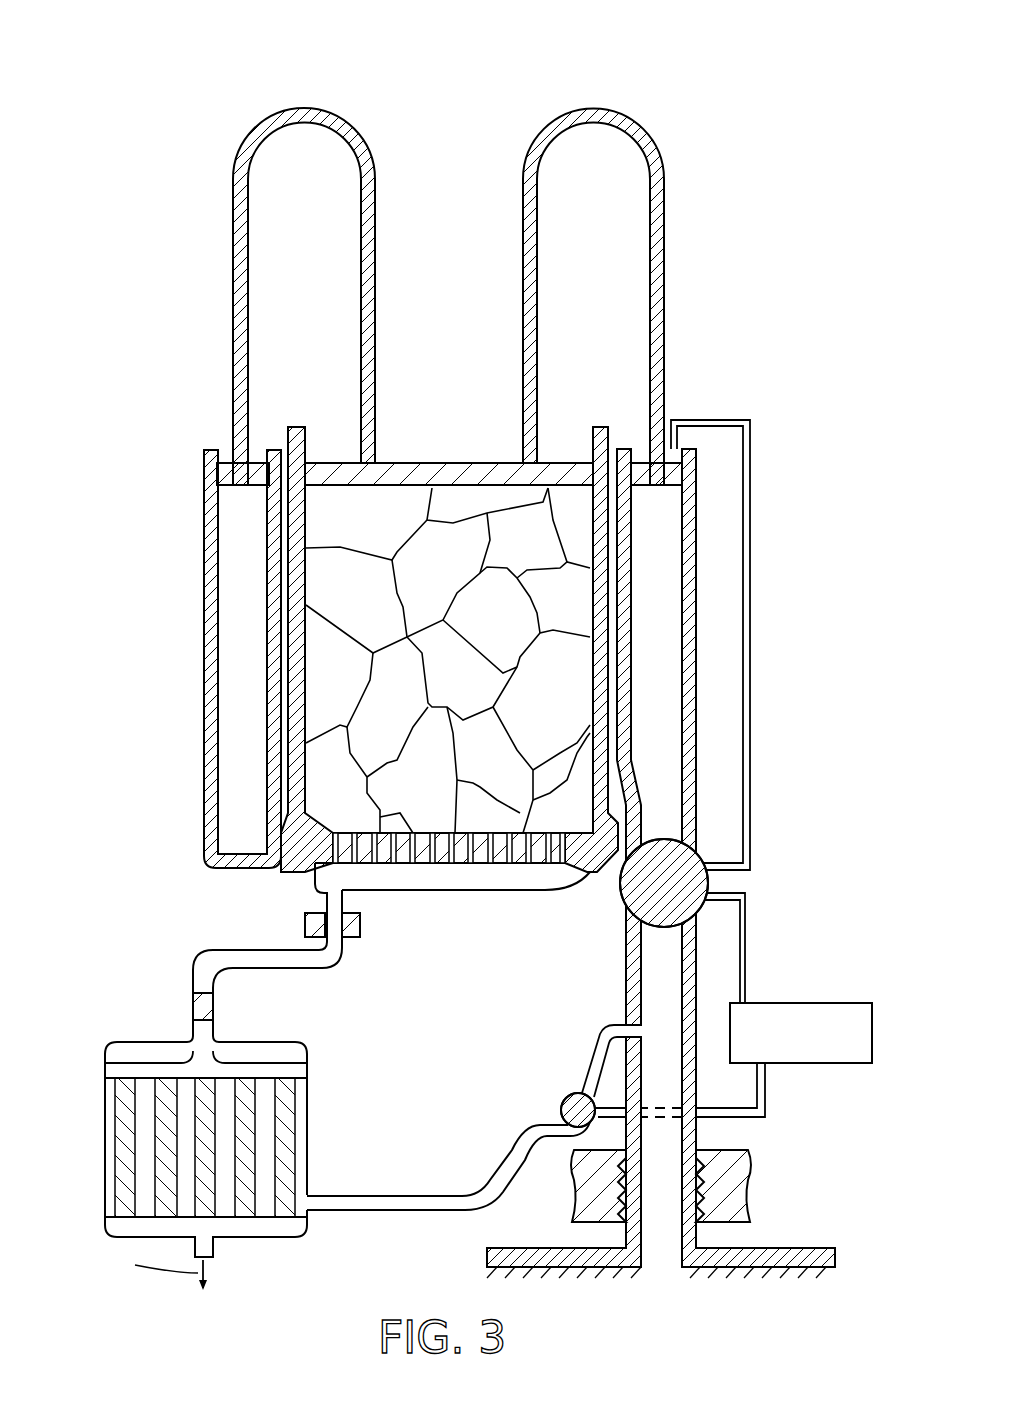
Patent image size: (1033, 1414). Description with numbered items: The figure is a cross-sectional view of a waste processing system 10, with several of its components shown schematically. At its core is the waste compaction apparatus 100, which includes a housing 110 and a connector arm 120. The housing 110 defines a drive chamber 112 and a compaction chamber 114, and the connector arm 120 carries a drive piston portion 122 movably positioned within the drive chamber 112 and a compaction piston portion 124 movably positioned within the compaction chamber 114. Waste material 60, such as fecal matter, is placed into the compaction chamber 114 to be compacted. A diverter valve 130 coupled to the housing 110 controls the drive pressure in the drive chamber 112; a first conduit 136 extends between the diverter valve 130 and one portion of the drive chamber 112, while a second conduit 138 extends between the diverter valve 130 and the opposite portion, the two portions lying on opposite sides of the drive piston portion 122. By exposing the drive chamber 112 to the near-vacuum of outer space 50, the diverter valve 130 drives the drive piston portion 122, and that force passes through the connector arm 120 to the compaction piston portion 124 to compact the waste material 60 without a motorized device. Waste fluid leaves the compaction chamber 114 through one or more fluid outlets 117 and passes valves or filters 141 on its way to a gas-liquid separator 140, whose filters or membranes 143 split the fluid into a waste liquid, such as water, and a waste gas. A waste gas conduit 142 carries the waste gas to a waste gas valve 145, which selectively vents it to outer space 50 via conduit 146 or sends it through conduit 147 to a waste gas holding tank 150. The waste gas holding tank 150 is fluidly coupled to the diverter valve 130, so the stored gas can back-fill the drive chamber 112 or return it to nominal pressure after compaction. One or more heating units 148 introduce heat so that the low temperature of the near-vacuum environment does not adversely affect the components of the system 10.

The waste processing system 10 is at (86, 68).
The waste compaction apparatus 100 is at (142, 390).
The connector arm 120 is at (517, 183).
The compaction piston portion 124 is at (476, 472).
The drive piston portion 122 is at (233, 473).
The waste material 60 is at (333, 522).
The compaction chamber 114 is at (318, 580).
The drive chamber 112 is at (239, 619).
The housing 110 is at (283, 712).
The first conduit 136 is at (747, 522).
The second conduit 138 is at (660, 827).
The diverter valve 130 is at (632, 892).
The fluid outlets 117 is at (508, 858).
The valves or filters 141 is at (315, 925).
The gas-liquid separator 140 is at (85, 1022).
The filters or membranes 143 is at (285, 1100).
The waste gas conduit 142 is at (380, 1203).
The conduit 146 is at (591, 1069).
The waste gas valve 145 is at (562, 1110).
The conduit 147 is at (607, 1114).
The heating units 148 is at (732, 1178).
The waste gas holding tank 150 is at (756, 1060).
The outer space 50 is at (656, 1291).